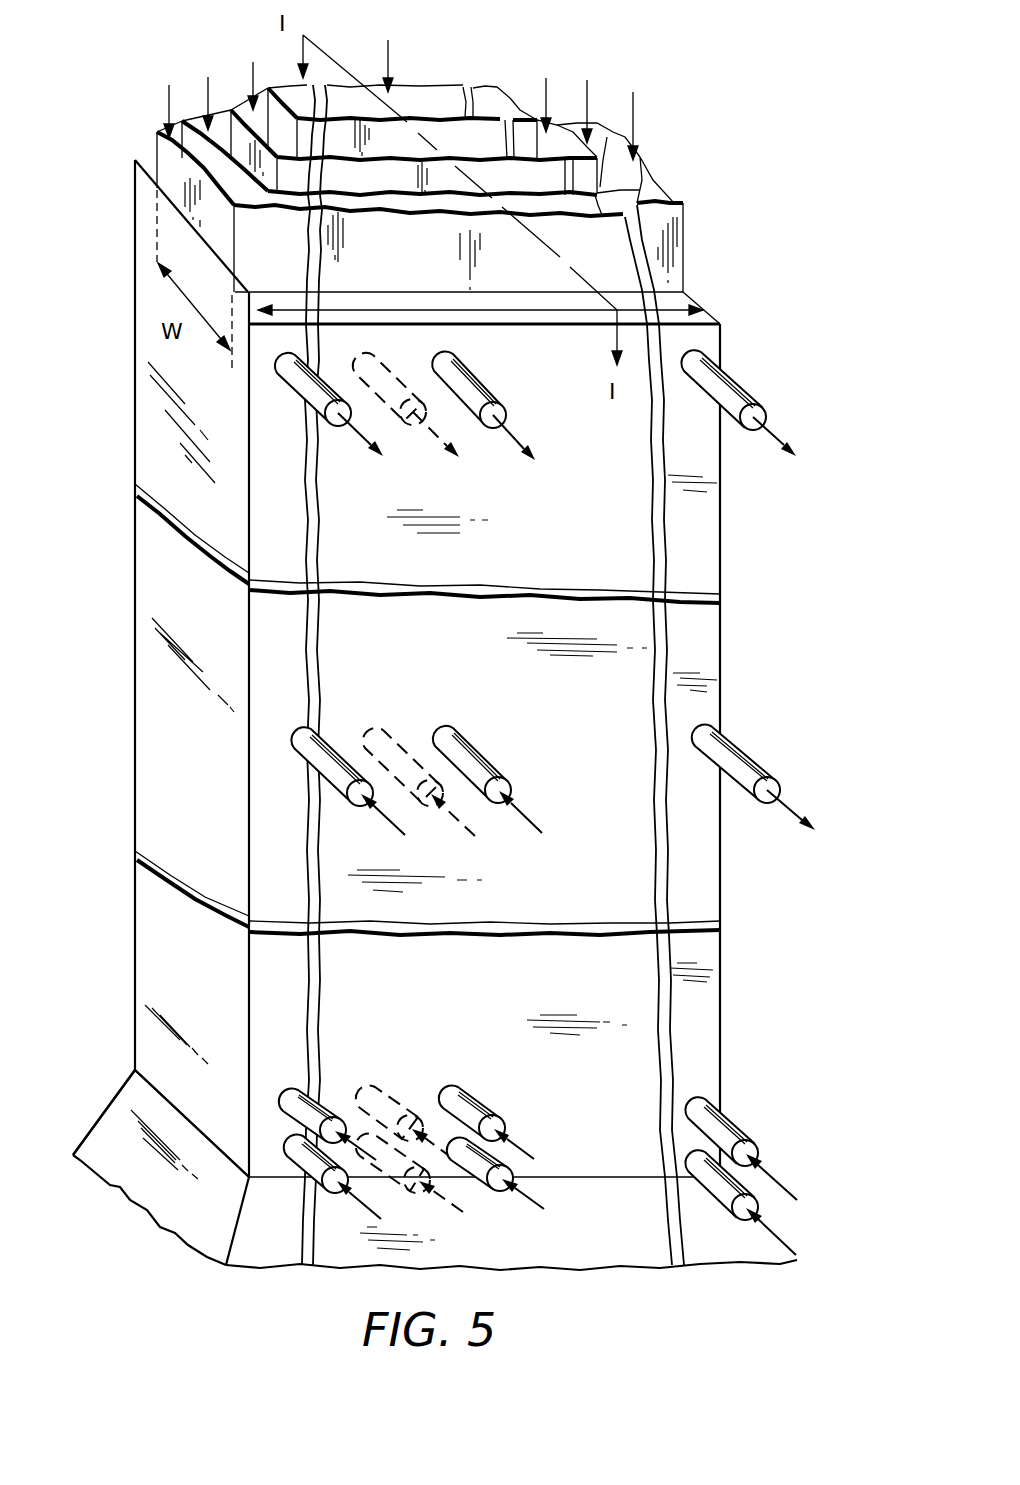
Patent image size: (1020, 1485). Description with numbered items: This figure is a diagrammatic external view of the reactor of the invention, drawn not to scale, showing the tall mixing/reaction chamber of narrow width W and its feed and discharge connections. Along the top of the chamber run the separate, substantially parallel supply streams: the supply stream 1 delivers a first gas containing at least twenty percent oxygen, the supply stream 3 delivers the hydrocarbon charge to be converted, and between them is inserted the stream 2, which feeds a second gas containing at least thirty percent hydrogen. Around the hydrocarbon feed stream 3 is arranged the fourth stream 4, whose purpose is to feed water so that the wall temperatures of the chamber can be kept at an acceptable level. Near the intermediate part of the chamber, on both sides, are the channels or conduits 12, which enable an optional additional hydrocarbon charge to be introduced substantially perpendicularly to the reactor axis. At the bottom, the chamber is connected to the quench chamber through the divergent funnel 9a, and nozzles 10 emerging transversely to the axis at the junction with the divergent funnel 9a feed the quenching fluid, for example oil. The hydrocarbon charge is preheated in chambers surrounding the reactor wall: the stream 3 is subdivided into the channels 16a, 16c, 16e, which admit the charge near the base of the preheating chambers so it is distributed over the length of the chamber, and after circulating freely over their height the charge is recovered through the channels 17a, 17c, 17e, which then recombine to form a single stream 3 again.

The supply stream 1 is at (496, 100).
The stream 2 is at (557, 138).
The supply stream 3 is at (605, 142).
The fourth stream 4 is at (653, 178).
The divergent funnel 9a is at (120, 1110).
The nozzles 10 is at (302, 1174).
The channels or conduits 12 is at (313, 760).
The channel 16a is at (465, 1105).
The channel 16c is at (322, 1107).
The channel 16e is at (730, 1130).
The channel 17a is at (480, 390).
The channel 17c is at (322, 398).
The channel 17e is at (747, 388).